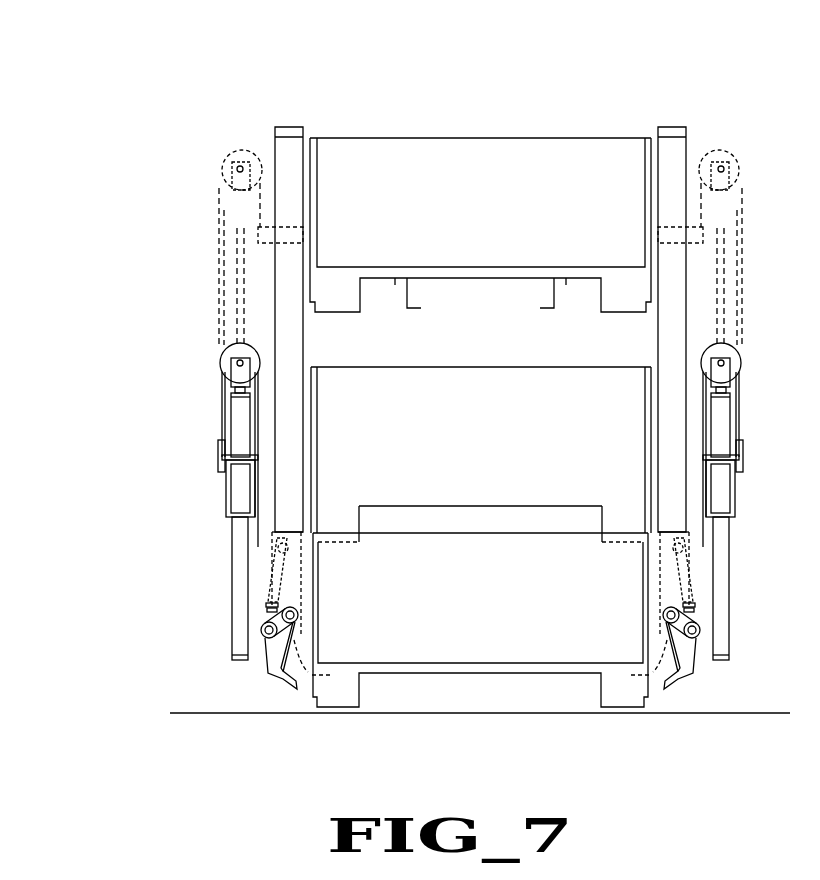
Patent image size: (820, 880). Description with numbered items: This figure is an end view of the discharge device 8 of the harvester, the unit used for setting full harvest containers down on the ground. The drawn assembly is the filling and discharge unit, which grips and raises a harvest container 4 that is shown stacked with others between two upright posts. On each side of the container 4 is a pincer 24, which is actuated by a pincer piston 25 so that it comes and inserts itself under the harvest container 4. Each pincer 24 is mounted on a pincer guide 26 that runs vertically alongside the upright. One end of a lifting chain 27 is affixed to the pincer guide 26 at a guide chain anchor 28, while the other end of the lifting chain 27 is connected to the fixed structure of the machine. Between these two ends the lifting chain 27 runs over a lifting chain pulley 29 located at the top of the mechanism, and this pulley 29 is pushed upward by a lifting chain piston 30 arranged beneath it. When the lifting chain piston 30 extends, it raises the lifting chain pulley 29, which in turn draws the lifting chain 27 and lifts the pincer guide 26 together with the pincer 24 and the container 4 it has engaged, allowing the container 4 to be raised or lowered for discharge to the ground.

The container handling apparatus 8 is at (246, 100).
The harvest container 4 is at (473, 367).
The pincers 24 is at (267, 669).
The pincer pistons 25 is at (268, 590).
The pincer guides 26 is at (225, 494).
The lifting chain 27 is at (221, 403).
The guide chain anchor 28 is at (217, 450).
The lifting chain pulley 29 is at (225, 353).
The lifting chain piston 30 is at (232, 556).